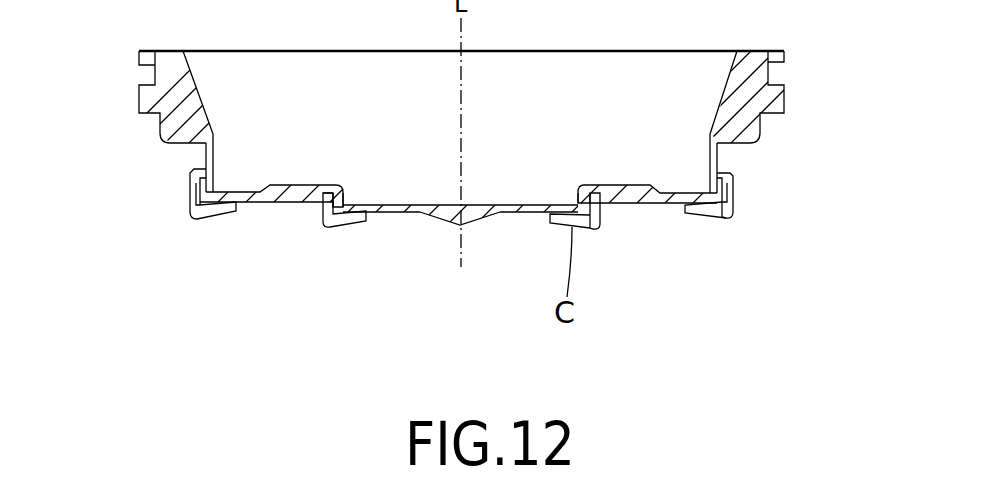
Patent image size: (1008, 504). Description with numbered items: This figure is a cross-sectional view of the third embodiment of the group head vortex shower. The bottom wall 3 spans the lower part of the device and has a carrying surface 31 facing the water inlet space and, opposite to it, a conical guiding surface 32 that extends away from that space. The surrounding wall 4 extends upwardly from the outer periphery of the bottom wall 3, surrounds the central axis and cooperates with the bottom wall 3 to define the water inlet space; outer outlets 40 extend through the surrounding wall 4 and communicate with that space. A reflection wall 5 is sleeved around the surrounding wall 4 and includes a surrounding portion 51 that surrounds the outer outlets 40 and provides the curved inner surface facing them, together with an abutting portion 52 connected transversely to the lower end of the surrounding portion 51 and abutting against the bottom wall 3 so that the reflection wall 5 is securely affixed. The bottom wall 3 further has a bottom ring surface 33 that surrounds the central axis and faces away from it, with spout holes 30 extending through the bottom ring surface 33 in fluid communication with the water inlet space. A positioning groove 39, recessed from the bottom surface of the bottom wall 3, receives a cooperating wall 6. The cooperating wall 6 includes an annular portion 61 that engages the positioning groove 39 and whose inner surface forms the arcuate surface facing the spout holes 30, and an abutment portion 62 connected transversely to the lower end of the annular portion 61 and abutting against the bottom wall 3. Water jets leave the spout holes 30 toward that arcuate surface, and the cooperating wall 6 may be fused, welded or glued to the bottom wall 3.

The bottom wall 3 is at (422, 213).
The surrounding wall 4 is at (148, 103).
The reflection wall 5 is at (779, 243).
The cooperating wall 6 is at (598, 286).
The spout holes 30 is at (340, 207).
The carrying surface 31 is at (480, 203).
The guiding surface 32 is at (470, 230).
The bottom ring surface 33 is at (323, 210).
The positioning groove 39 is at (320, 205).
The outer outlets 40 is at (213, 188).
The surrounding portion 51 is at (733, 207).
The abutting portion 52 is at (702, 217).
The annular portion 61 is at (600, 215).
The abutment portion 62 is at (560, 227).